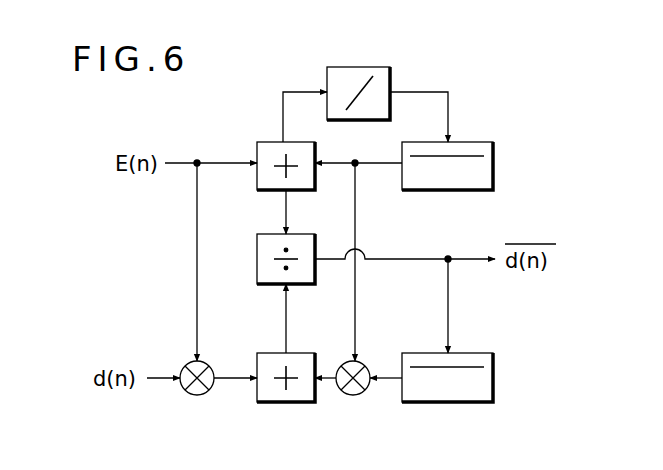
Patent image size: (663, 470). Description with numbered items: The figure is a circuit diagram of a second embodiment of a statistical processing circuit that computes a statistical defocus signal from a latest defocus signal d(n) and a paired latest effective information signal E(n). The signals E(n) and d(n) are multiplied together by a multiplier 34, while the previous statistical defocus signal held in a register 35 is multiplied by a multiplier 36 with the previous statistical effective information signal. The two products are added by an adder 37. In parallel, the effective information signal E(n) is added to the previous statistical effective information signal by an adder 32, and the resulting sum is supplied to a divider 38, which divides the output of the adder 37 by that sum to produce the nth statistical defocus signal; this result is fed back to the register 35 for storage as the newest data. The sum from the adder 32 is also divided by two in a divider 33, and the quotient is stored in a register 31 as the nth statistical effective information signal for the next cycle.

The register 31 is at (476, 141).
The adder 32 is at (270, 141).
The divider 33 is at (375, 67).
The multiplier 34 is at (201, 391).
The register 35 is at (470, 352).
The multiplier 36 is at (353, 396).
The adder 37 is at (276, 402).
The divider 38 is at (262, 234).